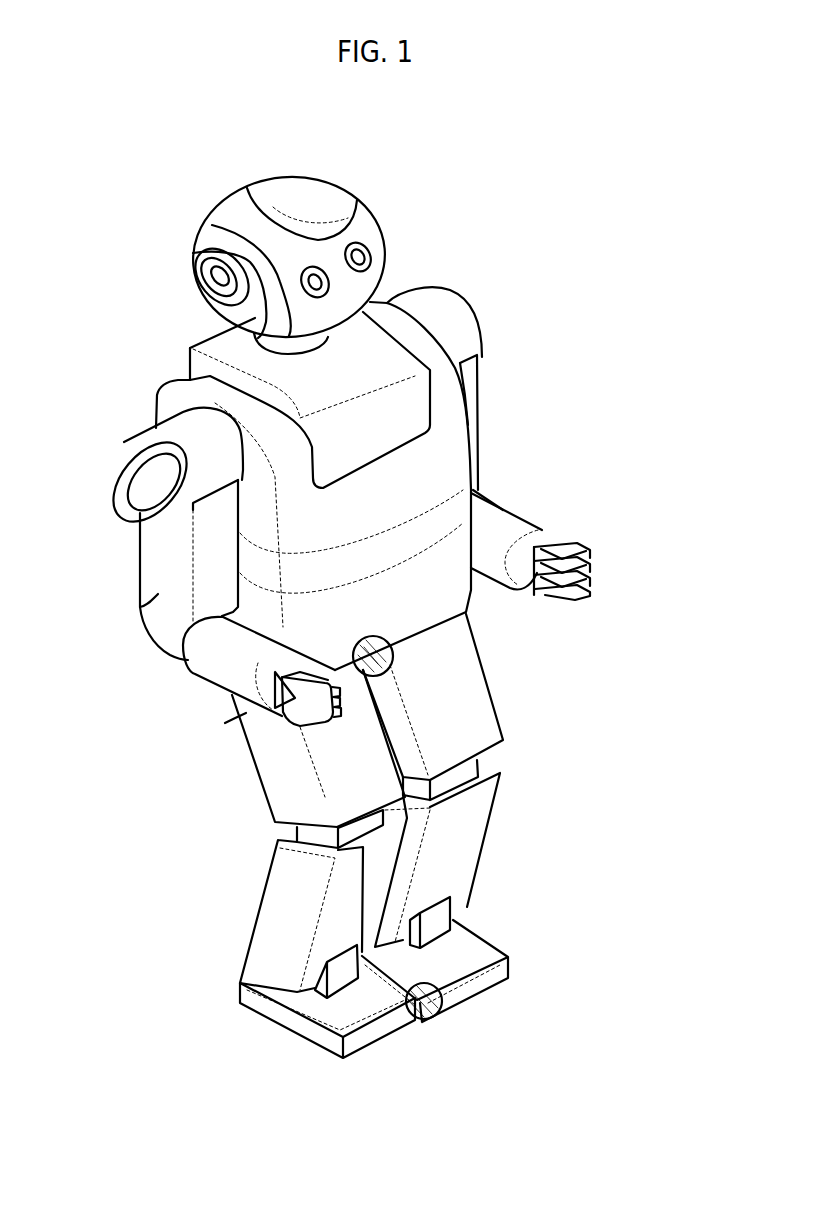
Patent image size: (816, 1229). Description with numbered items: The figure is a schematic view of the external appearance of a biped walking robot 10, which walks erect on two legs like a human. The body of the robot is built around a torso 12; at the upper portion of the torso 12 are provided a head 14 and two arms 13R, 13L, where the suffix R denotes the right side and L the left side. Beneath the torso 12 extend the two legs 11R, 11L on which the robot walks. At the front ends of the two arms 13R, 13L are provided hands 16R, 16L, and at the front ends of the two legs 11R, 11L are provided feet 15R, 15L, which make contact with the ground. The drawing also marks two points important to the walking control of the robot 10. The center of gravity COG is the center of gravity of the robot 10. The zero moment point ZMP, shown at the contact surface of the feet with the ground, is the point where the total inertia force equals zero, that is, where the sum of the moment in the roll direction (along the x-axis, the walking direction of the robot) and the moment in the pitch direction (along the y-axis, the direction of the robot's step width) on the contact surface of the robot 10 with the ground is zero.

The robot 10 is at (544, 165).
The head 14 is at (381, 240).
The torso 12 is at (452, 433).
The right arm 13R is at (162, 600).
The left arm 13L is at (500, 515).
The right hand 16R is at (243, 713).
The left hand 16L is at (592, 569).
The right leg 11R is at (280, 870).
The left leg 11L is at (490, 814).
The right foot 15R is at (293, 1020).
The left foot 15L is at (504, 960).
The center of gravity COG is at (393, 655).
The zero moment point ZMP is at (436, 1014).